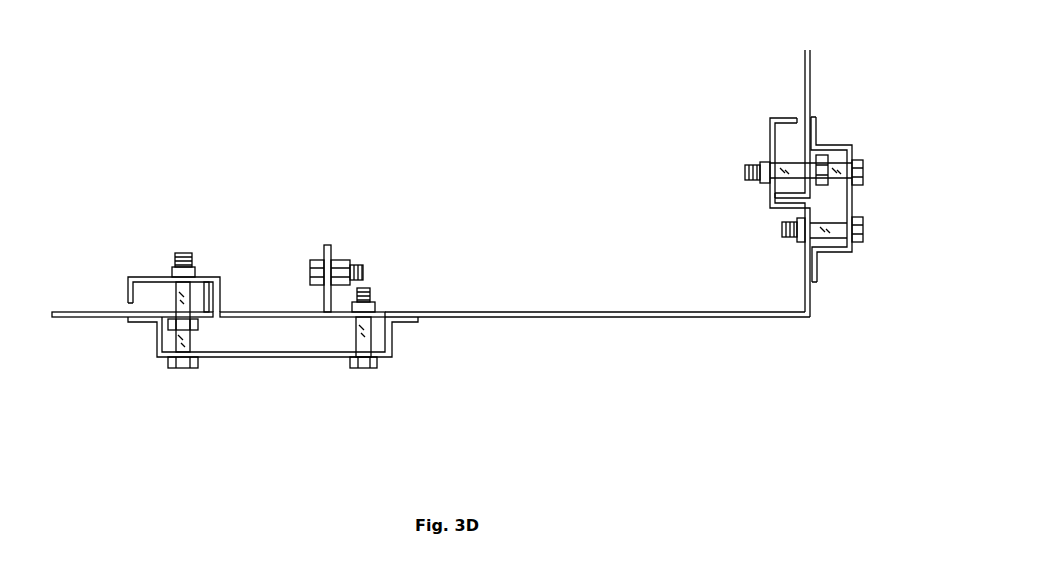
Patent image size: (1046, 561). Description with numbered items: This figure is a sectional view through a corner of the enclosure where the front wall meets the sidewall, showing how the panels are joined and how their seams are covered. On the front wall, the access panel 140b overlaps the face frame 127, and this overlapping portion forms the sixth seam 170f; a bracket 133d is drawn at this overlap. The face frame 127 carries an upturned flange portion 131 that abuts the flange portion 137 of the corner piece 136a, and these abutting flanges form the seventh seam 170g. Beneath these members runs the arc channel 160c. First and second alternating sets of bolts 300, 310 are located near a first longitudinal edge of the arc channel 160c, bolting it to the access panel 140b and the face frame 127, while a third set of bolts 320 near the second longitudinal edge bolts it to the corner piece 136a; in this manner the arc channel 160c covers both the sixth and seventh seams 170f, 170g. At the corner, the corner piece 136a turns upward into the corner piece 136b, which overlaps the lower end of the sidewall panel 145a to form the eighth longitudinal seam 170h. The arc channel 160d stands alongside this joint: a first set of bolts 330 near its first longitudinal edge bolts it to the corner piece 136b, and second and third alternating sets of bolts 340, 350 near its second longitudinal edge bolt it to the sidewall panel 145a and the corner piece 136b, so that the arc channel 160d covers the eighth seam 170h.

The access panel 140b is at (80, 310).
The bracket 133d is at (142, 275).
The sixth seam 170f is at (211, 277).
The first set of bolts 300 is at (180, 370).
The second set of bolts 310 is at (177, 327).
The face frame 127 is at (266, 310).
The flange portion 131 is at (322, 250).
The flange portion 137 is at (333, 246).
The seventh seam 170g is at (326, 245).
The arc channel 160c is at (272, 358).
The third set of bolts 320 is at (365, 370).
The corner piece 136a is at (528, 318).
The corner piece 136b is at (812, 302).
The sidewall panel 145a is at (805, 72).
The arc channel 160d is at (852, 197).
The third set of bolts 350 is at (818, 163).
The second set of bolts 340 is at (864, 172).
The first set of bolts 330 is at (864, 230).
The eighth longitudinal seam 170h is at (767, 198).